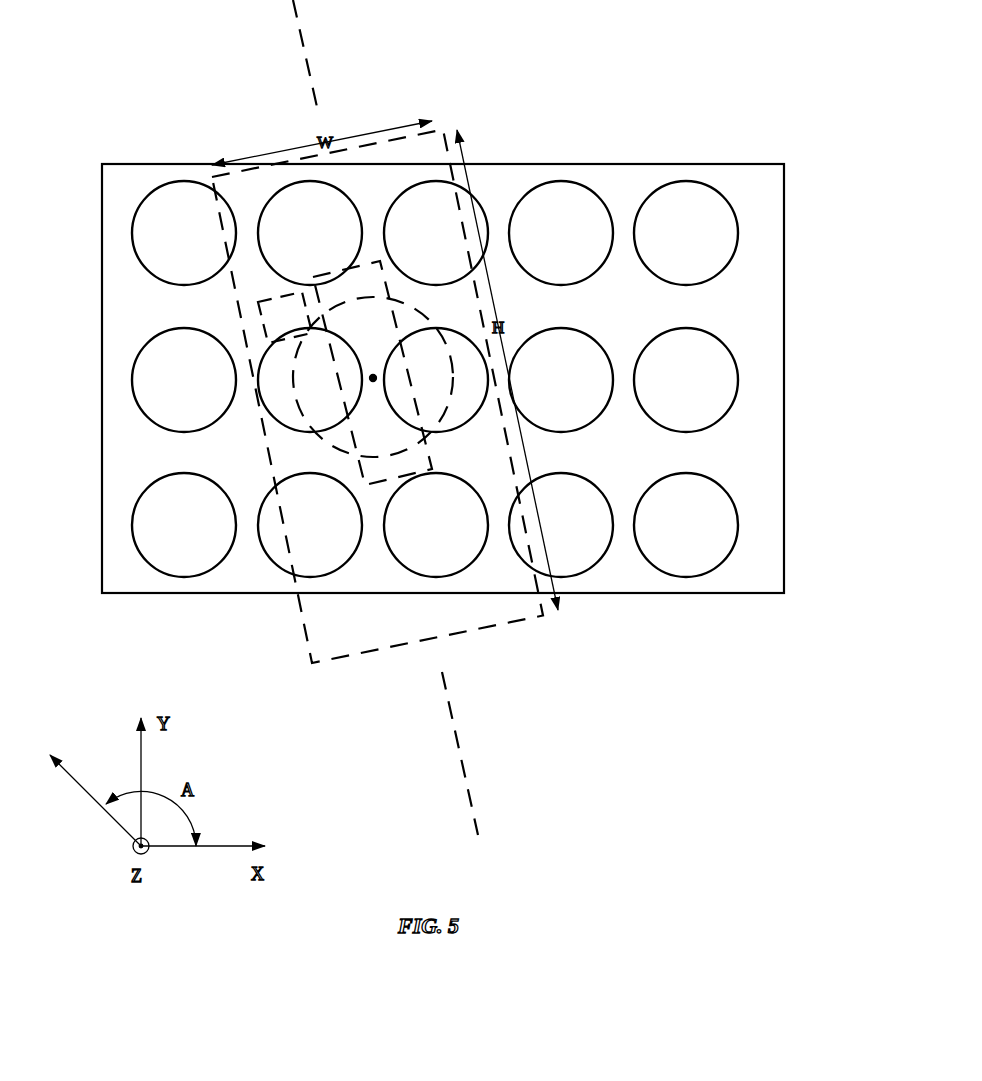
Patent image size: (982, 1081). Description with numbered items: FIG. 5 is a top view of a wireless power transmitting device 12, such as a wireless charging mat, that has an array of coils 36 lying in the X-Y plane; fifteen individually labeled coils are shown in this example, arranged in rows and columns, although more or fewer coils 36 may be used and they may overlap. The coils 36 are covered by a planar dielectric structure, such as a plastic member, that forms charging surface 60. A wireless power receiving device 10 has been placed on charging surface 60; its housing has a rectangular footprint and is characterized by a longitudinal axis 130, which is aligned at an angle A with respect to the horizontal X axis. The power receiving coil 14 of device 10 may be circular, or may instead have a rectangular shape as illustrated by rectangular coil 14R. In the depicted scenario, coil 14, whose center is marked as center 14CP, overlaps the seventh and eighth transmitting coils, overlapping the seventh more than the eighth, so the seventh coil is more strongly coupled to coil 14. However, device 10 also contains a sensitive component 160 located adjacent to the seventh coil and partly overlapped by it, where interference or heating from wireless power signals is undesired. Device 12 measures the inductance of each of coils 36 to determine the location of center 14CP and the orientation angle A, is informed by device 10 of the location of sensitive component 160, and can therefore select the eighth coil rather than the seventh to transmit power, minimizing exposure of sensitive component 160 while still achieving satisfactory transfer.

The wireless power receiving device 10 is at (437, 128).
The wireless power transmitting device 12 is at (838, 202).
The power receiving coil 14 is at (360, 293).
The center of coil 14 14CP is at (373, 383).
The rectangular coil 14R is at (366, 487).
The coils 36 is at (590, 550).
The charging surface 60 is at (785, 380).
The longitudinal axis 130 is at (303, 53).
The sensitive component 160 is at (258, 305).